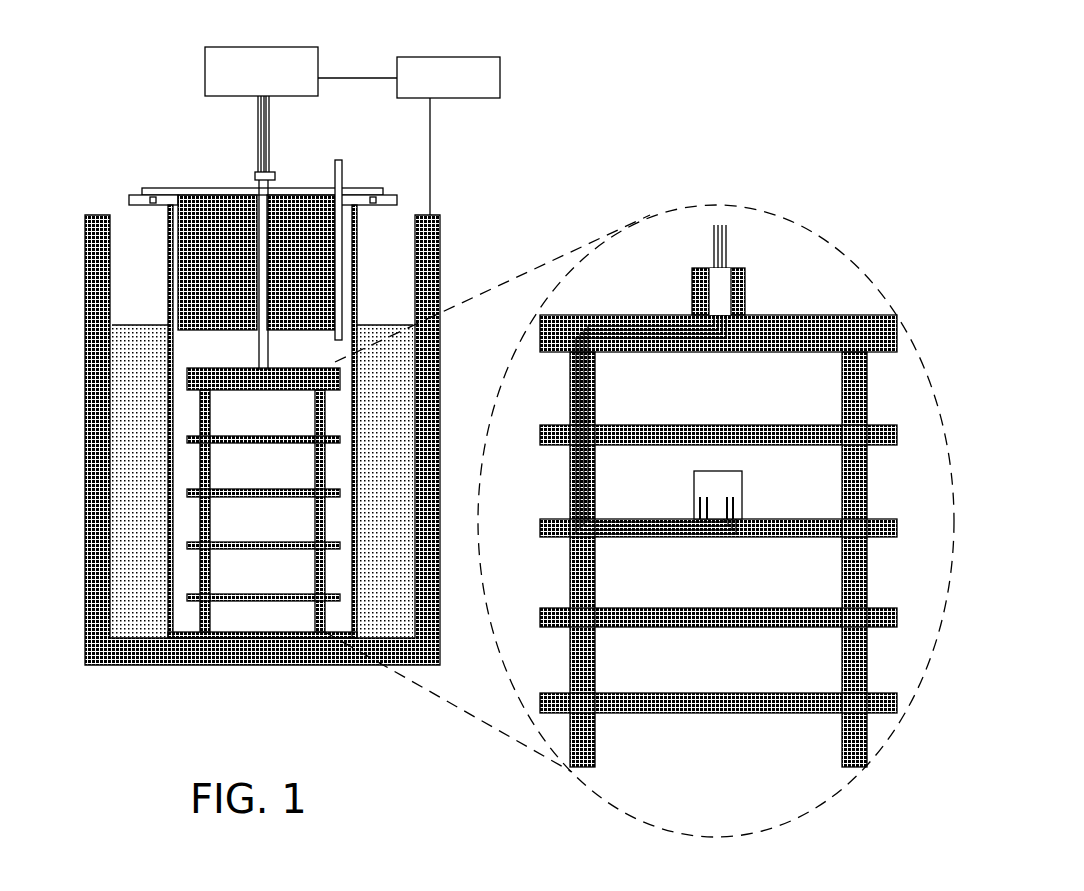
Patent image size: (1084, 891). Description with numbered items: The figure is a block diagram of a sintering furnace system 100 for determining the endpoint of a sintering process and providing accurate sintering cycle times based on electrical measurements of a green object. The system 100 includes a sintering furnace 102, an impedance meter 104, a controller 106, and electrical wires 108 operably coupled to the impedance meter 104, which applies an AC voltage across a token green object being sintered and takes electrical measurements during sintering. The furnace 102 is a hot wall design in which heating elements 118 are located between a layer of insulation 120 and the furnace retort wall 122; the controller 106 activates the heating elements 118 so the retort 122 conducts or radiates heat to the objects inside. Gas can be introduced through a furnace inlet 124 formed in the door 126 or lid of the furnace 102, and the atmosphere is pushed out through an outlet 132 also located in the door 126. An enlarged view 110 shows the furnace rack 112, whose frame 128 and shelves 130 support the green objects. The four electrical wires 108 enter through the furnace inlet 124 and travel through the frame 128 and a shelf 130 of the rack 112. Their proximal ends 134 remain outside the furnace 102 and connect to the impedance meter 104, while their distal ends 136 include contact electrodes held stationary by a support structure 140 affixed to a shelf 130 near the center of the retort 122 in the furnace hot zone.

The sintering furnace system 100 is at (578, 58).
The sintering furnace 102 is at (112, 184).
The impedance meter 104 is at (235, 97).
The controller 106 is at (452, 98).
The electrical wires 108 is at (258, 150).
The enlarged view 110 is at (660, 215).
The furnace rack 112 is at (229, 364).
The heating elements 118 is at (141, 325).
The layer of insulation 120 is at (100, 222).
The furnace retort wall 122 is at (170, 438).
The furnace inlet 124 is at (275, 173).
The door 126 is at (208, 205).
The frame 128 is at (892, 399).
The shelves 130 is at (898, 555).
The outlet 132 is at (343, 170).
The proximal ends 134 is at (279, 103).
The distal ends 136 is at (736, 485).
The support structure 140 is at (694, 488).